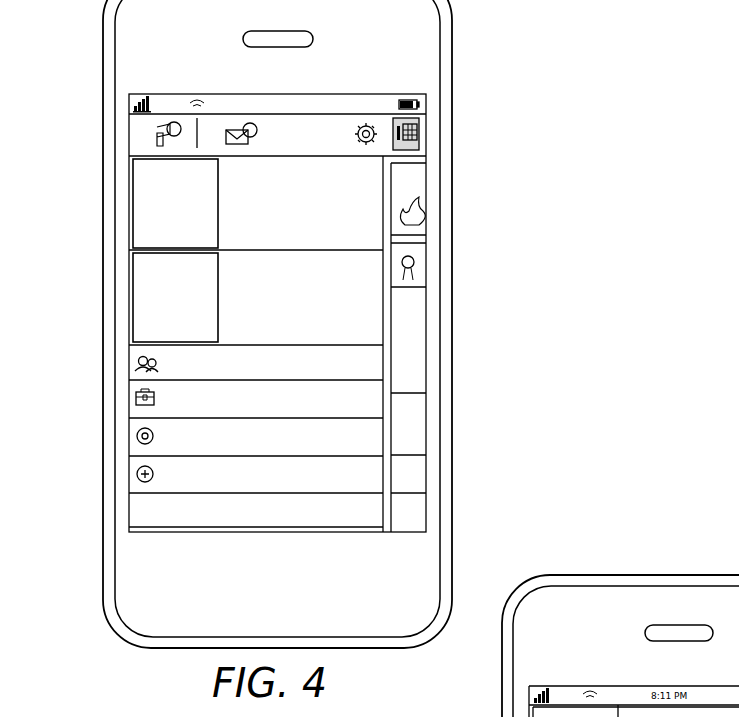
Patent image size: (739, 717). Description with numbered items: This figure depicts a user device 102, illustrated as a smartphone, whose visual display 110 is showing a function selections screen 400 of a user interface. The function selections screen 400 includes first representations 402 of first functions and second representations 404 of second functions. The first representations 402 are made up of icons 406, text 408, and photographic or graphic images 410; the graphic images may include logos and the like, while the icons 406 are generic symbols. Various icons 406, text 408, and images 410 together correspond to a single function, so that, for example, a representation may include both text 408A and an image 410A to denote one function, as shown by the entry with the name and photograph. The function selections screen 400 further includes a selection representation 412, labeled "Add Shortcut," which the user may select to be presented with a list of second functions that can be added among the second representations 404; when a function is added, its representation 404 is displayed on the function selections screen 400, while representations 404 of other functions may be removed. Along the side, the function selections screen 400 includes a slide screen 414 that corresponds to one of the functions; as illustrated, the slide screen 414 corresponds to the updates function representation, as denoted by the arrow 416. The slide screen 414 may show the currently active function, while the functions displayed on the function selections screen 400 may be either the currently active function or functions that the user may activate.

The user device 102 is at (430, 24).
The visual display 110 is at (134, 124).
The first representations 402 is at (257, 133).
The icons 406 is at (160, 134).
The photographic or graphic images 410 is at (152, 204).
The image 410A is at (152, 290).
The text 408 is at (268, 184).
The text 408A is at (293, 265).
The second representations 404 is at (135, 414).
The selection representation 412 is at (255, 476).
The arrow 416 is at (388, 180).
The function selections screen 400 is at (372, 393).
The slide screen 414 is at (418, 487).